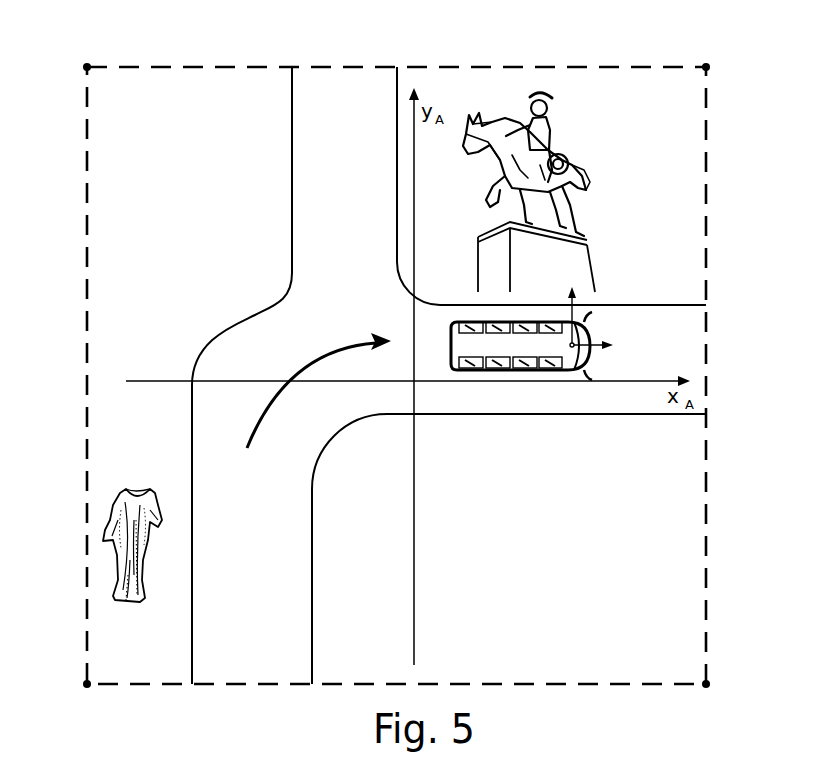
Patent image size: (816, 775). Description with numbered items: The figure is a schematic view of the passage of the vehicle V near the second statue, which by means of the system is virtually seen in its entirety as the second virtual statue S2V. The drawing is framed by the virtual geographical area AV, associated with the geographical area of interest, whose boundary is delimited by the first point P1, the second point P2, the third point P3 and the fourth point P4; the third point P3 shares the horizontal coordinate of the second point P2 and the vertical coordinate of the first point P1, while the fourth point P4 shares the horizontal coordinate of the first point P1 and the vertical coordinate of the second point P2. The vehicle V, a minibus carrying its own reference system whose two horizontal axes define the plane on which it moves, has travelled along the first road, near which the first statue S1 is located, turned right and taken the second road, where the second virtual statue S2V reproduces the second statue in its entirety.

The first point P1 is at (79, 52).
The second point P2 is at (706, 700).
The third point P3 is at (710, 52).
The fourth point P4 is at (87, 698).
The virtual geographical area AV is at (692, 112).
The vehicle V is at (650, 343).
The first statue S1 is at (100, 491).
The second virtual statue S2V is at (614, 214).